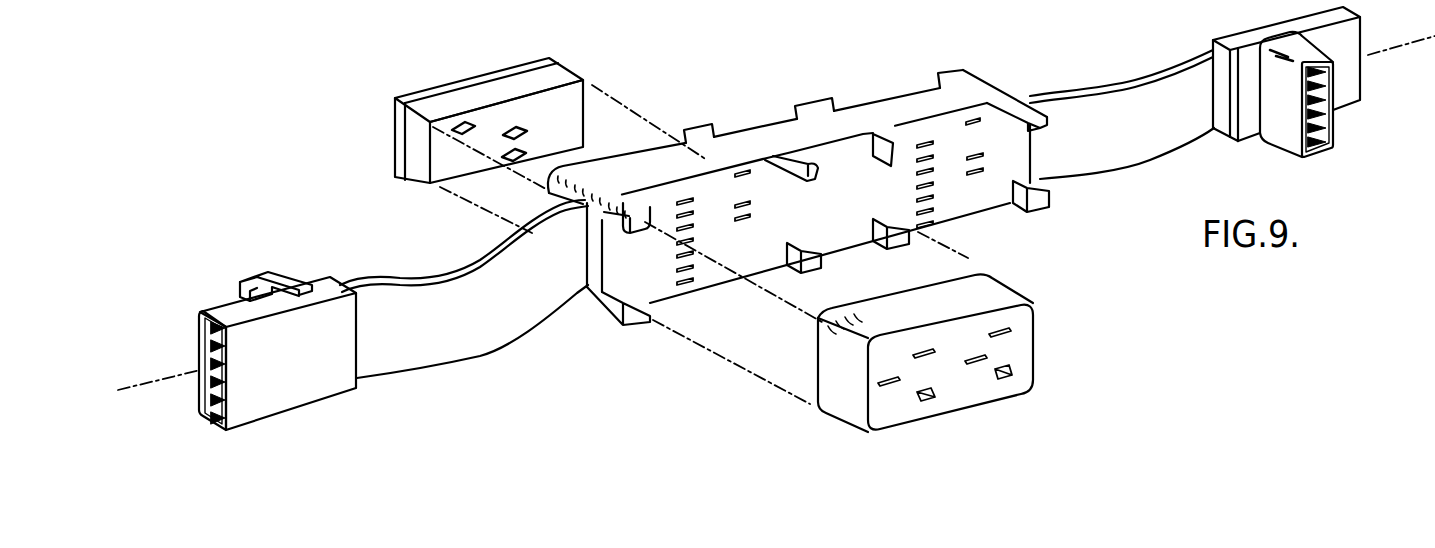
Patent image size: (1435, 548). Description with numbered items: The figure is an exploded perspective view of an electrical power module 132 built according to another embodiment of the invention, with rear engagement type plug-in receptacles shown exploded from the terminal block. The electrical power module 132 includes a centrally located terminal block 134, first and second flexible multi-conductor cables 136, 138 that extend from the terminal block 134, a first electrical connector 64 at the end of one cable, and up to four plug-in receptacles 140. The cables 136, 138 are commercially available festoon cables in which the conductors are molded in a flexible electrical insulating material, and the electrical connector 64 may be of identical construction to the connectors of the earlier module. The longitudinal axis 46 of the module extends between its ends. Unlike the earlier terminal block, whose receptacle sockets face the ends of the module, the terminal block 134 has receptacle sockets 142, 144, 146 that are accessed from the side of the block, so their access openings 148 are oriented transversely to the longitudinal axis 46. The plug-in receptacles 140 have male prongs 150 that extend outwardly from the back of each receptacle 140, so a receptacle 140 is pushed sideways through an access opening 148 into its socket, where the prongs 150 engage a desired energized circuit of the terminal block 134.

The longitudinal axis 46 is at (172, 378).
The first electrical connector 64 is at (263, 272).
The electrical power module 132 is at (786, 94).
The terminal block 134 is at (875, 104).
The first flexible multi-conductor cable 136 is at (490, 354).
The second flexible multi-conductor cable 138 is at (1151, 167).
The plug-in receptacle 140 is at (397, 112).
The receptacle socket 142 is at (982, 197).
The receptacle socket 144 is at (656, 163).
The receptacle socket 146 is at (918, 93).
The access opening 148 is at (693, 200).
The male prongs 150 is at (476, 124).